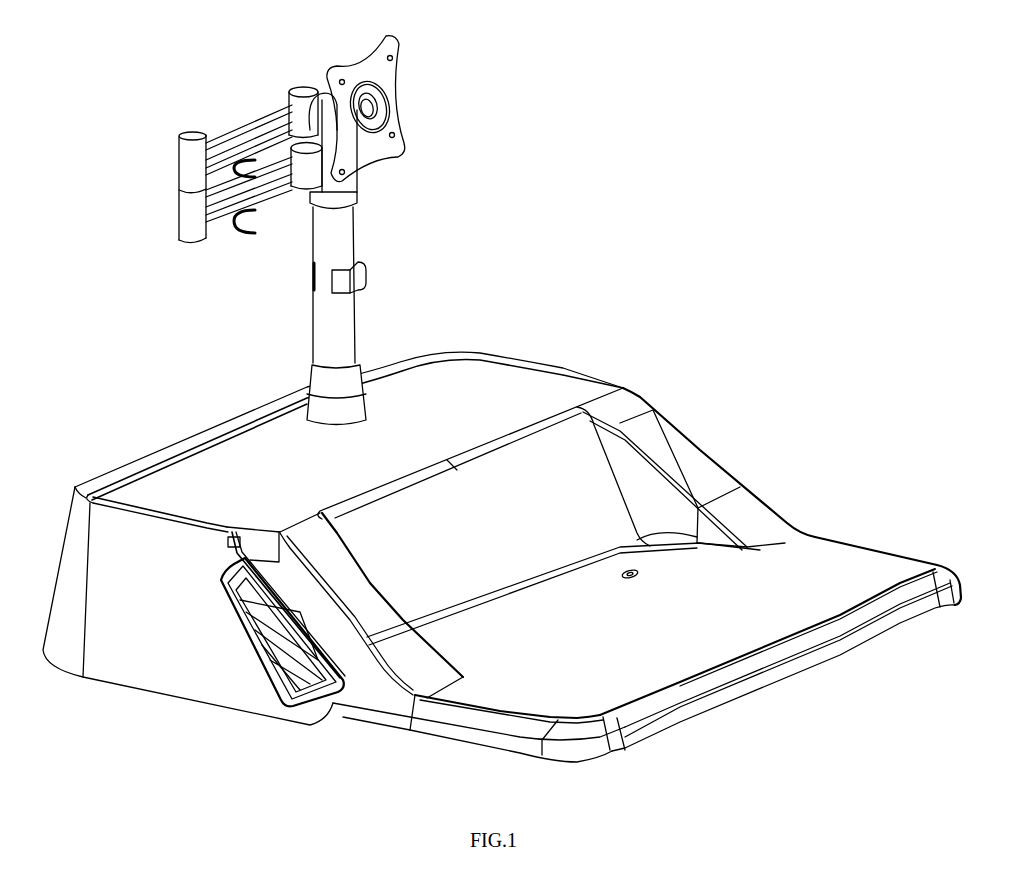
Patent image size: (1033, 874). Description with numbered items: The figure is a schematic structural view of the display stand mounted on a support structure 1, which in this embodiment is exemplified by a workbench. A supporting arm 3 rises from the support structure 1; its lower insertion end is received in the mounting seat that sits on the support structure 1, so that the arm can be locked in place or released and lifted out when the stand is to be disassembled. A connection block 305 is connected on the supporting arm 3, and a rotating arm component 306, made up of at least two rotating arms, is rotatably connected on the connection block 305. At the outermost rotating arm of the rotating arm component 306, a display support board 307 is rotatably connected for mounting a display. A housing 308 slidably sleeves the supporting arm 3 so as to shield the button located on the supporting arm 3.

The support structure 1 is at (505, 398).
The supporting arm 3 is at (333, 317).
The connection block 305 is at (357, 183).
The rotating arm component 306 is at (250, 160).
The display support board 307 is at (393, 137).
The housing 308 is at (343, 383).